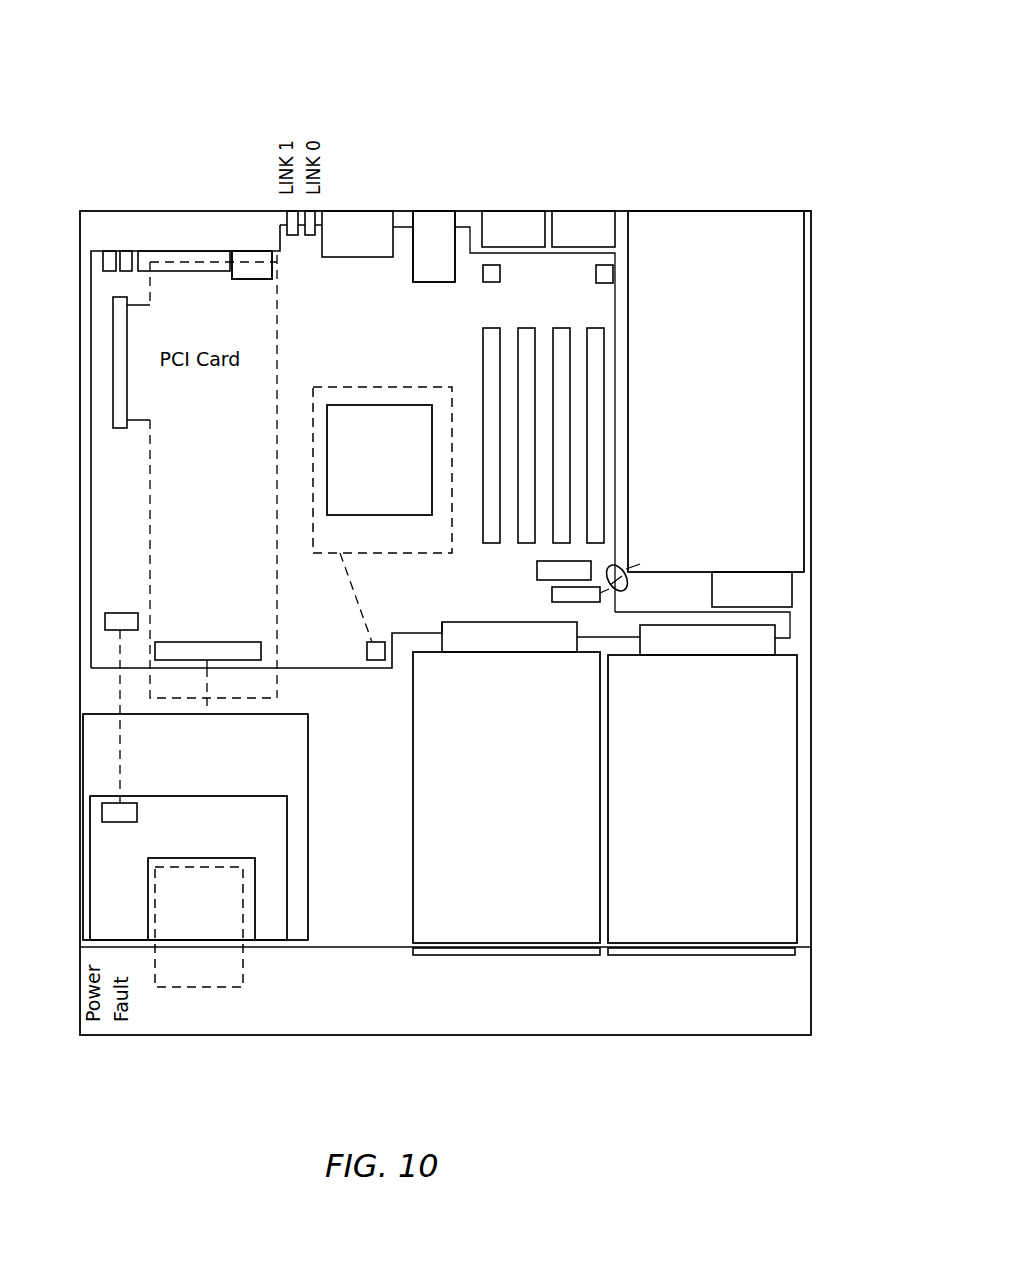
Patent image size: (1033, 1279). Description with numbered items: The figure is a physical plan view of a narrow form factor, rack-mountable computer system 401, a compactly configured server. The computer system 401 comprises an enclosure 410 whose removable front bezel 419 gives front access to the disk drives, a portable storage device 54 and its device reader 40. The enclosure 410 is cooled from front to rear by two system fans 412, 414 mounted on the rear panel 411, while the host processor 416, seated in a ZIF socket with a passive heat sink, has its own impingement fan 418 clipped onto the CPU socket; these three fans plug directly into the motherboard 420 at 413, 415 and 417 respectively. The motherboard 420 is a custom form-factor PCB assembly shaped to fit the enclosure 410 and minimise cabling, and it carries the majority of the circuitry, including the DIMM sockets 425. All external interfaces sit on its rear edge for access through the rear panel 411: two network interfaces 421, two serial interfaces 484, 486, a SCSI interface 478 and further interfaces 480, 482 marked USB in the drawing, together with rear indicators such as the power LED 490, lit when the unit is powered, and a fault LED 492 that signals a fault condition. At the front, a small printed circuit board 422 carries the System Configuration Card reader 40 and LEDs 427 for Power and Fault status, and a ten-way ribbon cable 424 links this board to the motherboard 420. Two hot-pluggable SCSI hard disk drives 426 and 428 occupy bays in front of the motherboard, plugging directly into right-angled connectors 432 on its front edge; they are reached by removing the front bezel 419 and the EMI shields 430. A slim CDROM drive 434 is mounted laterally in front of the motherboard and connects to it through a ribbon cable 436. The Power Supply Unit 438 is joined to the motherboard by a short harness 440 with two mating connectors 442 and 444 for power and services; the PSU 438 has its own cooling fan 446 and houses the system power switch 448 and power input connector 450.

The computer system 401 is at (264, 1093).
The enclosure 410 is at (811, 892).
The rear panel 411 is at (785, 211).
The LEDs 427 is at (80, 1027).
The front bezel 419 is at (380, 1020).
The power LED 490 is at (111, 189).
The fault LED 492 is at (135, 192).
The SCSI interface 478 is at (184, 194).
The USB 1 connector 482 is at (242, 192).
The USB 0 connector 480 is at (252, 192).
The network interfaces 421 is at (378, 135).
The serial interface 486 is at (433, 187).
The serial interface 484 is at (439, 158).
The system fan 412 is at (513, 179).
The system fan 414 is at (583, 179).
The system power switch 448 is at (690, 158).
The power input connector 450 is at (760, 151).
The Power Supply Unit 438 is at (699, 418).
The cooling fan 446 is at (795, 593).
The motherboard 420 is at (332, 361).
The fan connection 413 is at (491, 284).
The fan connection 415 is at (613, 272).
The DIMM sockets 425 is at (590, 405).
The host processor 416 is at (362, 485).
The impingement fan 418 is at (439, 545).
The fan connection 417 is at (367, 650).
The mating connector 442 is at (537, 571).
The mating connector 444 is at (552, 592).
The cable 440 is at (628, 586).
The right-angled connectors 432 is at (655, 656).
The SCSI hard disk drive 426 is at (489, 822).
The SCSI hard disk drive 428 is at (685, 822).
The EMI shields 430 is at (572, 1017).
The CDROM drive 434 is at (177, 778).
The ribbon cable 424 is at (120, 745).
The ribbon cable 436 is at (268, 690).
The printed circuit board 422 is at (134, 885).
The System Configuration Card reader 40 is at (148, 910).
The portable storage device 54 is at (237, 979).